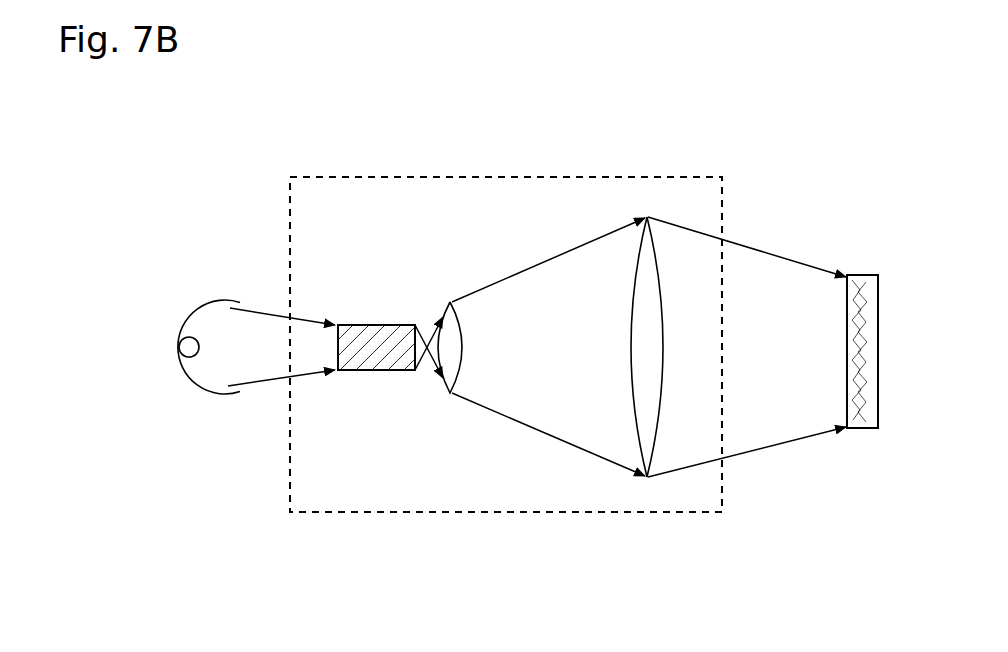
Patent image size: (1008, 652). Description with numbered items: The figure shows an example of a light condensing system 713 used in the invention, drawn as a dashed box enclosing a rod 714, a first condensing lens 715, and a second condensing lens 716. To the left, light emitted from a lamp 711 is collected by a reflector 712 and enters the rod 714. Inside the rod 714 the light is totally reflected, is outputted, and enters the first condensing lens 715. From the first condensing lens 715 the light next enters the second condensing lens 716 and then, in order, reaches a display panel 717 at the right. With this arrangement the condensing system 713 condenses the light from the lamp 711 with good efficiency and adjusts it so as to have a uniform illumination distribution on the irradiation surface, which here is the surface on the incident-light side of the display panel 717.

The lamp 711 is at (182, 340).
The reflector 712 is at (206, 392).
The condensing system 713 is at (506, 177).
The rod 714 is at (357, 371).
The first condensing lens 715 is at (452, 392).
The second condensing lens 716 is at (647, 478).
The display panel 717 is at (860, 428).